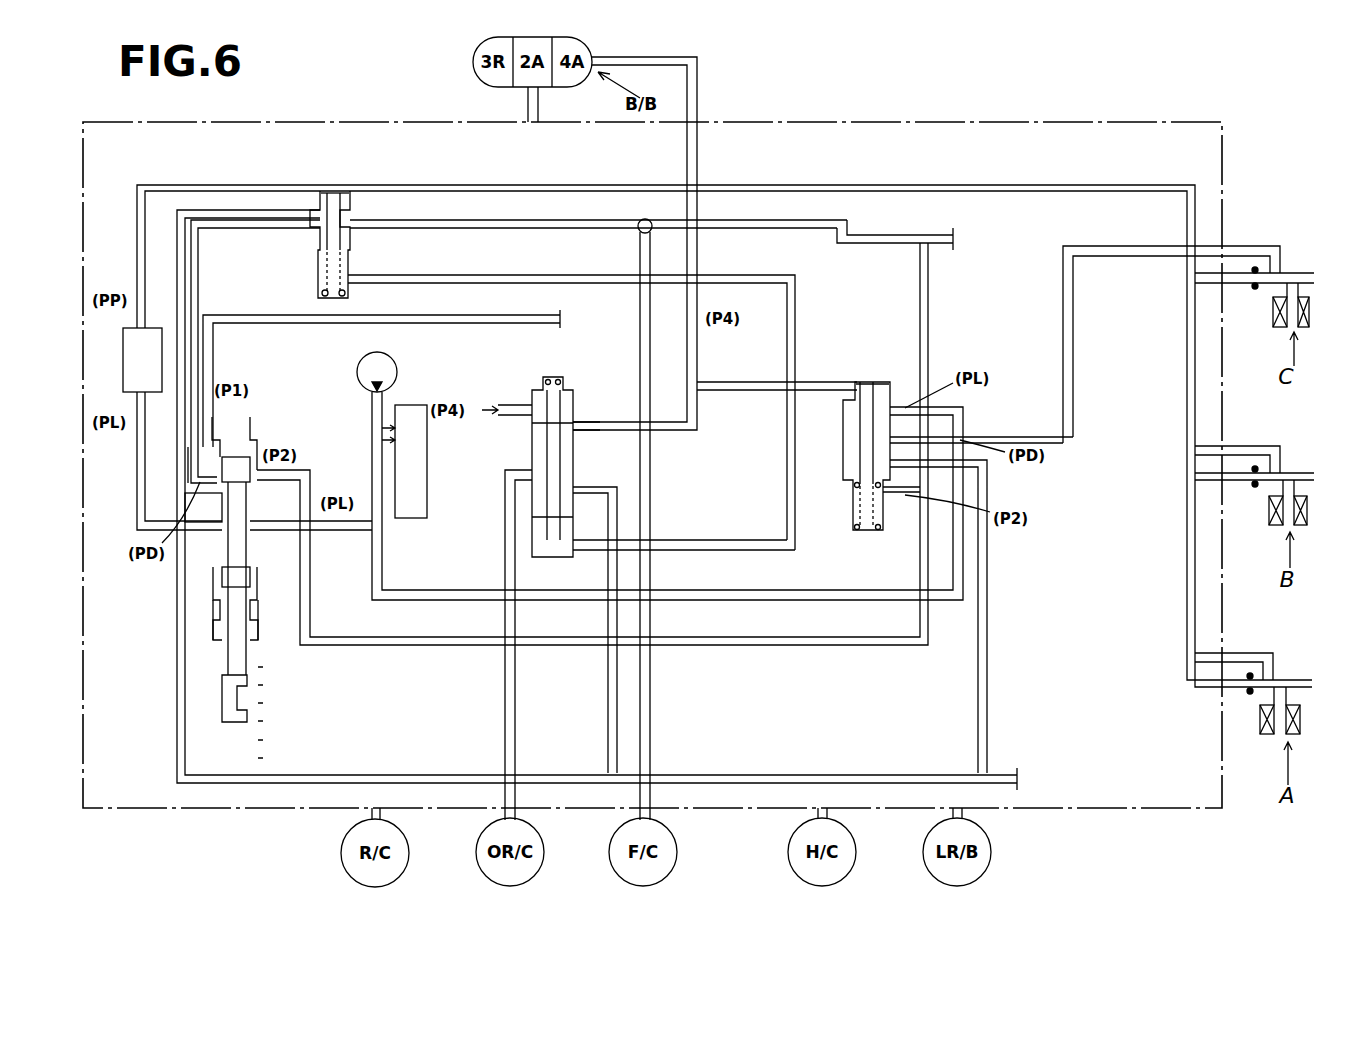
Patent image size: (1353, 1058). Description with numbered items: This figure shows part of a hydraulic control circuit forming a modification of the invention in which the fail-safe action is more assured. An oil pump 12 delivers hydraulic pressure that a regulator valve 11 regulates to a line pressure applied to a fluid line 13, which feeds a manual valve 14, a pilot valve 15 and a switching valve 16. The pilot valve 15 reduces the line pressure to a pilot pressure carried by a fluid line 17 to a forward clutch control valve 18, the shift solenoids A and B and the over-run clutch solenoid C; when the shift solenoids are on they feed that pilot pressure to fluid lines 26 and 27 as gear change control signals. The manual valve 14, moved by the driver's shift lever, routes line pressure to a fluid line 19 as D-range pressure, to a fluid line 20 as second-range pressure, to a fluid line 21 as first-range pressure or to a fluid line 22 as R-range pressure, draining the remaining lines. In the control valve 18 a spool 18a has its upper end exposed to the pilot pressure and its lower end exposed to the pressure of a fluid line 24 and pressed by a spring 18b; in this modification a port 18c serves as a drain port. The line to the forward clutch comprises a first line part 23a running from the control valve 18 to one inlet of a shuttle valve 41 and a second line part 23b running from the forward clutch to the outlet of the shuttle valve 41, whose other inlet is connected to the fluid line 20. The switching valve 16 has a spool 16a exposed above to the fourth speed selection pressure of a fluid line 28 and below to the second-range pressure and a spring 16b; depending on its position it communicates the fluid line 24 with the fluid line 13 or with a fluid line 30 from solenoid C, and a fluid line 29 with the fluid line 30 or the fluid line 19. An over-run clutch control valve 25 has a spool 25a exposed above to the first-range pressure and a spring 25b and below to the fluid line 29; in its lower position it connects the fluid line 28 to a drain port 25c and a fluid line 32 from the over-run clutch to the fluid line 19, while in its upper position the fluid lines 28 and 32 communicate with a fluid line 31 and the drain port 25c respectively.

The regulator valve 11 is at (425, 515).
The oil pump 12 is at (358, 360).
The fluid line 13 is at (135, 528).
The manual valve 14 is at (264, 553).
The pilot valve 15 is at (122, 360).
The switching valve 16 is at (885, 380).
The spool 16a is at (862, 380).
The spring 16b is at (870, 532).
The fluid line 17 is at (568, 185).
The forward clutch control valve 18 is at (363, 194).
The spool 18a is at (337, 195).
The spring 18b is at (318, 280).
The port 18c is at (358, 245).
The fluid line 19 is at (180, 492).
The fluid line 20 is at (818, 243).
The fluid line 21 is at (276, 324).
The fluid line 22 is at (203, 606).
The first line part 23a is at (458, 226).
The second line part 23b is at (652, 458).
The fluid line 24 is at (508, 318).
The over-run clutch control valve 25 is at (586, 384).
The spool 25a is at (575, 425).
The spring 25b is at (552, 375).
The drain port 25c is at (530, 450).
The fluid line 26 is at (1268, 652).
The fluid line 27 is at (1272, 445).
The fluid line 28 is at (745, 382).
The fluid line 29 is at (720, 540).
The fluid line 30 is at (1075, 345).
The fluid line 31 is at (510, 403).
The fluid line 32 is at (517, 700).
The shuttle valve 41 is at (637, 222).